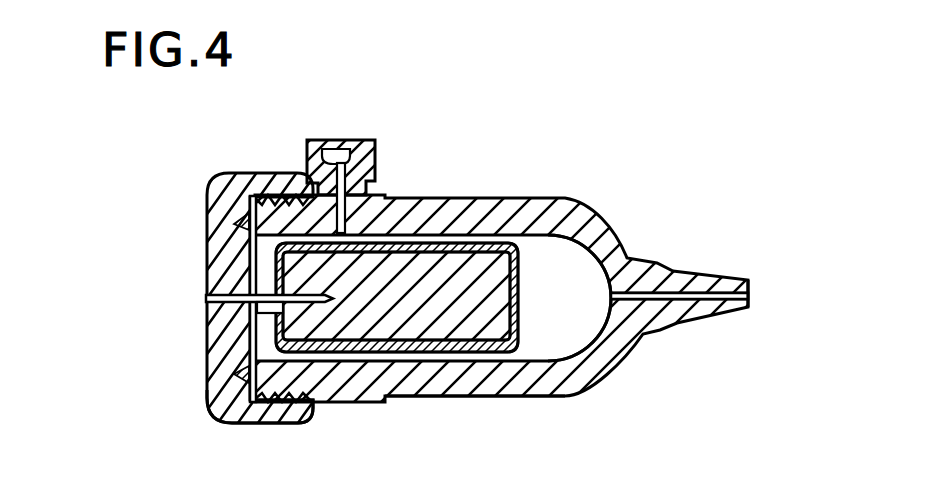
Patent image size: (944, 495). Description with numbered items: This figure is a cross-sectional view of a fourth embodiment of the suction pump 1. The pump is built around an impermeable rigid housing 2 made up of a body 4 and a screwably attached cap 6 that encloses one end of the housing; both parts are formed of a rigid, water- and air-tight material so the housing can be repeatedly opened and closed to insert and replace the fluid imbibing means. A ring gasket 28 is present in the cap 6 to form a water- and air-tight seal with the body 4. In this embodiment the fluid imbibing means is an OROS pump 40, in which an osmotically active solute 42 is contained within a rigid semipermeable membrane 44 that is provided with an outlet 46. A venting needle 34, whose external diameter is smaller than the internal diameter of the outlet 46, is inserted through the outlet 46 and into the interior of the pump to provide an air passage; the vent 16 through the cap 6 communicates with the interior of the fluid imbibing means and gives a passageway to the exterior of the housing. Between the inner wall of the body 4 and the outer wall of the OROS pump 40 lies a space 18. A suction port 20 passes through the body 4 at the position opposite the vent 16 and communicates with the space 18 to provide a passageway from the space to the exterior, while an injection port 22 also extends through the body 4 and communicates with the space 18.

The suction pump 1 is at (199, 434).
The impermeable rigid housing 2 is at (423, 186).
The body 4 is at (337, 403).
The cap 6 is at (260, 424).
The vent 16 is at (207, 298).
The space 18 is at (573, 250).
The suction port 20 is at (750, 296).
The injection port 22 is at (343, 139).
The ring gasket 28 is at (209, 185).
The venting needle 34 is at (250, 250).
The OROS pump 40 is at (521, 237).
The osmotically active solute 42 is at (418, 317).
The rigid semipermeable membrane 44 is at (471, 353).
The outlet 46 is at (257, 333).